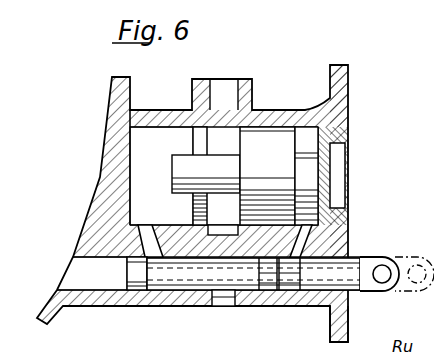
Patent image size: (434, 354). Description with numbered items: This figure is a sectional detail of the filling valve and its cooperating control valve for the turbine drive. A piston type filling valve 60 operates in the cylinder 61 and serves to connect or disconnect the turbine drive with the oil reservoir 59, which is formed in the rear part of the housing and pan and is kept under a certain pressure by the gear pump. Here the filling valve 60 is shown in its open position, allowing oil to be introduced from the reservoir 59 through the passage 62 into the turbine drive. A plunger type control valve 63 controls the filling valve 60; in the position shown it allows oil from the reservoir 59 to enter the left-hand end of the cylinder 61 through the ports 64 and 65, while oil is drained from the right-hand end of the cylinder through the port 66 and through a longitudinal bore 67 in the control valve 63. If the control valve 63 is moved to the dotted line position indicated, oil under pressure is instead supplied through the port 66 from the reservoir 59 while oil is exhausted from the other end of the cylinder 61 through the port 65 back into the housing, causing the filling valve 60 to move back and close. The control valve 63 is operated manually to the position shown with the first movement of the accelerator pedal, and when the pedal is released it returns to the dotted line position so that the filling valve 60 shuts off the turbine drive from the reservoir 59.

The oil reservoir 59 is at (320, 319).
The filling valve 60 is at (267, 176).
The cylinder 61 is at (161, 176).
The passage 62 is at (223, 92).
The control valve 63 is at (348, 263).
The port 64 is at (228, 298).
The port 65 is at (145, 233).
The port 66 is at (300, 239).
The longitudinal bore 67 is at (127, 275).